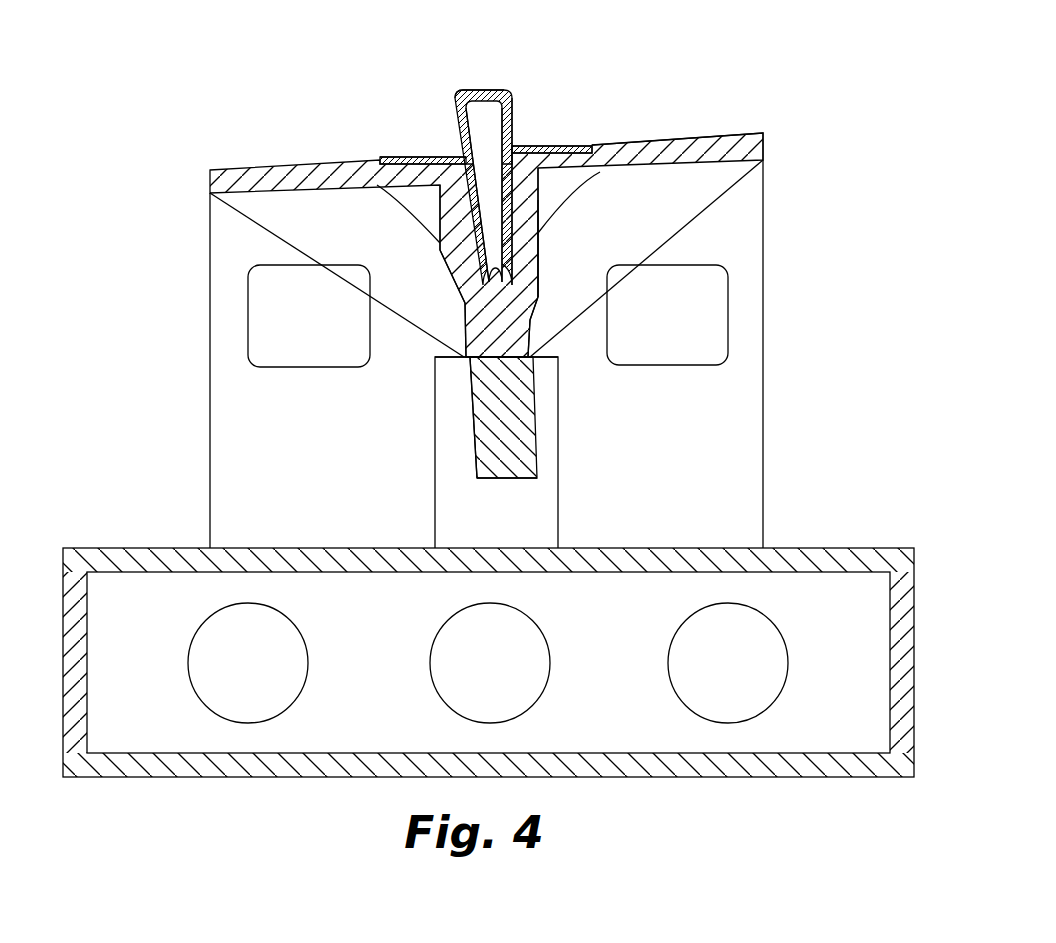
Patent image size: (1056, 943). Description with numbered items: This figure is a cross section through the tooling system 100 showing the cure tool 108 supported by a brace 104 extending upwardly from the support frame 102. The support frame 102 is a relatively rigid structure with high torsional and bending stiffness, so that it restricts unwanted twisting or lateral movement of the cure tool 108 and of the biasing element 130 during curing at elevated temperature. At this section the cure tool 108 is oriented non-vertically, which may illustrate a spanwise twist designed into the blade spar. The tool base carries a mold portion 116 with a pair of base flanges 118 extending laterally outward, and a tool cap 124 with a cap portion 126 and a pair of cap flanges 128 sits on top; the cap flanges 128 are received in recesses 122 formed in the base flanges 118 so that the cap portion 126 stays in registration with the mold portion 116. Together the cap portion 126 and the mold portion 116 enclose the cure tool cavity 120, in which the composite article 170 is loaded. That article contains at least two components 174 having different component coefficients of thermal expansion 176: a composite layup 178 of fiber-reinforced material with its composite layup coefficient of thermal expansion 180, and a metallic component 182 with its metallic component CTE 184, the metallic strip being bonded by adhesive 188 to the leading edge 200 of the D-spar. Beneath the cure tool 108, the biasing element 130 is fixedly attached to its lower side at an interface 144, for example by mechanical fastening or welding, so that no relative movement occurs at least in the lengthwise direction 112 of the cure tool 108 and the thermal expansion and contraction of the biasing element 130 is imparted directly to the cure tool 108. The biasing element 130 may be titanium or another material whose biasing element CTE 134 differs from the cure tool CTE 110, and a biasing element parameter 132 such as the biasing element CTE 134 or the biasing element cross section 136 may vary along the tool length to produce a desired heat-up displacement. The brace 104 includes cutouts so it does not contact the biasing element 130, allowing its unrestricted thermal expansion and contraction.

The tooling system 100 is at (960, 117).
The support frame 102 is at (914, 620).
The brace 104 is at (210, 455).
The cure tool 108 is at (525, 303).
The cure tool CTE 110 is at (540, 276).
The lengthwise direction 112 is at (540, 195).
The mold portion 116 is at (450, 252).
The base flange 118 is at (213, 182).
The cure tool cavity 120 is at (560, 170).
The recess 122 is at (378, 158).
The tool cap 124 is at (490, 90).
The cap portion 126 is at (458, 92).
The cap flange 128 is at (415, 157).
The biasing element 130 is at (556, 383).
The biasing element parameter 132 is at (537, 428).
The biasing element CTE 134 is at (477, 395).
The biasing element cross section 136 is at (483, 437).
The interface 144 is at (545, 375).
The composite article 170 is at (438, 185).
The component 174 is at (455, 127).
The component coefficient of thermal expansion 176 is at (510, 103).
The composite layup 178 is at (440, 208).
The composite layup coefficient of thermal expansion 180 is at (440, 208).
The metallic component 182 is at (462, 272).
The metallic component CTE 184 is at (462, 272).
The adhesive 188 is at (540, 230).
The leading edge 200 is at (465, 320).